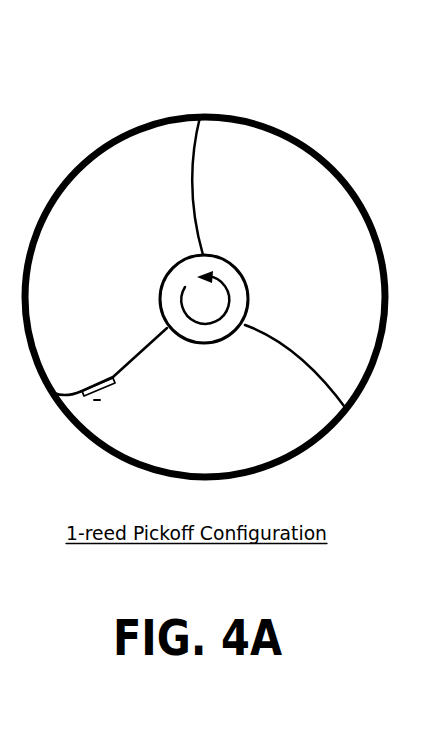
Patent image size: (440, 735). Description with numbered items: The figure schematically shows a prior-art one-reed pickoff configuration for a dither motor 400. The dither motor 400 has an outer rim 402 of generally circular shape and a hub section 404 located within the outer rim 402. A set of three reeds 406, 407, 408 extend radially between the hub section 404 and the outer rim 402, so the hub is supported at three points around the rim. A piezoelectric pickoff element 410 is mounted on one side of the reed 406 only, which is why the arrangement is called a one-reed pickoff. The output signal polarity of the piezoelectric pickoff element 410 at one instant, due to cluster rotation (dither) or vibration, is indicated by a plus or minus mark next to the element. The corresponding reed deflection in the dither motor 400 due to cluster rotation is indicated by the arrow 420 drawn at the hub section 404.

The dither motor 400 is at (106, 88).
The outer rim 402 is at (345, 178).
The hub section 404 is at (250, 297).
The reed 406 is at (125, 362).
The reed 407 is at (197, 218).
The reed 408 is at (290, 353).
The piezoelectric pickoff element 410 is at (112, 381).
The arrow 420 is at (181, 297).